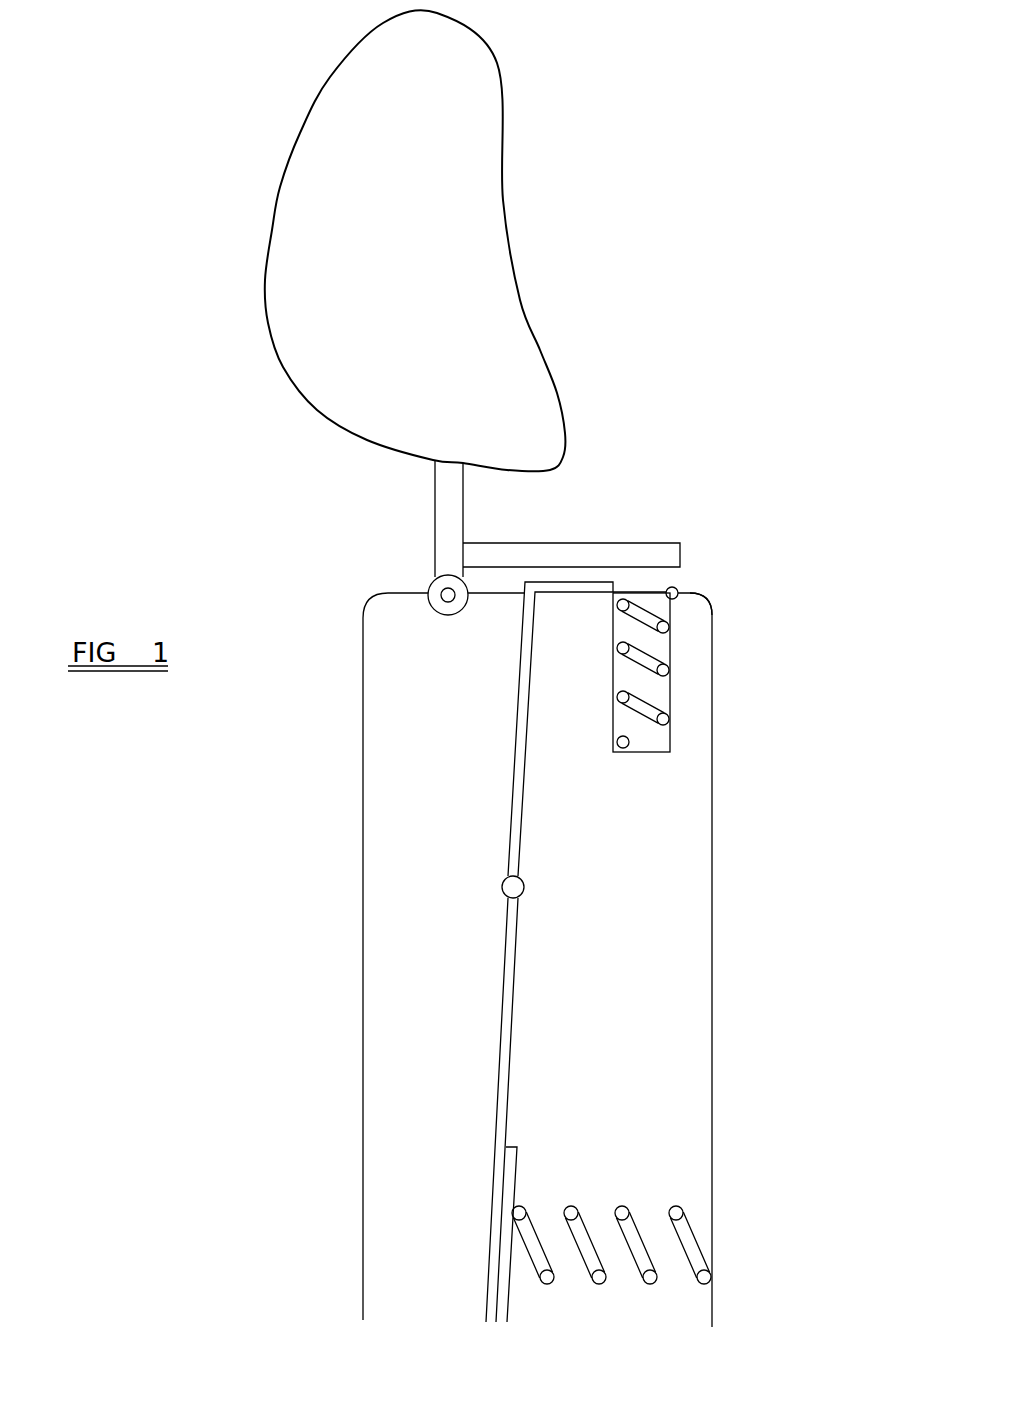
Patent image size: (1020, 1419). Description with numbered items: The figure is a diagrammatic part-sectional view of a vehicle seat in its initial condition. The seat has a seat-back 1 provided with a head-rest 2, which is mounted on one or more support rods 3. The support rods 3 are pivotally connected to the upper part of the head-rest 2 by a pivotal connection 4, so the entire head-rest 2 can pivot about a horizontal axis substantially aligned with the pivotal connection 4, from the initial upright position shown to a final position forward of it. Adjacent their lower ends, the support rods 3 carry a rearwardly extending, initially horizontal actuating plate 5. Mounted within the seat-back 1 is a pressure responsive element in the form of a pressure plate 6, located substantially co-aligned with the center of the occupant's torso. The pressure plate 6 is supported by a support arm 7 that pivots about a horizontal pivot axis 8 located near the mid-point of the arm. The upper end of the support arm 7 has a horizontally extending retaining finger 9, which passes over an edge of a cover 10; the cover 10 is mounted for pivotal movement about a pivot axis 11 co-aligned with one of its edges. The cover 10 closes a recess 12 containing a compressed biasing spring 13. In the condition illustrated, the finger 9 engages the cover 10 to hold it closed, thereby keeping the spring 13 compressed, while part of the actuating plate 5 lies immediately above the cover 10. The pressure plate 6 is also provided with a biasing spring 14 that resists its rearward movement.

The seat-back 1 is at (355, 866).
The head-rest 2 is at (256, 216).
The support rods 3 is at (435, 507).
The pivotal connection 4 is at (430, 586).
The actuating plate 5 is at (612, 553).
The pressure plate 6 is at (485, 1239).
The support arm 7 is at (500, 1055).
The horizontal pivot axis 8 is at (525, 893).
The retaining finger 9 is at (617, 580).
The cover 10 is at (680, 590).
The pivot axis 11 is at (713, 617).
The recess 12 is at (702, 672).
The biasing spring 13 is at (680, 740).
The biasing spring 14 is at (652, 1282).